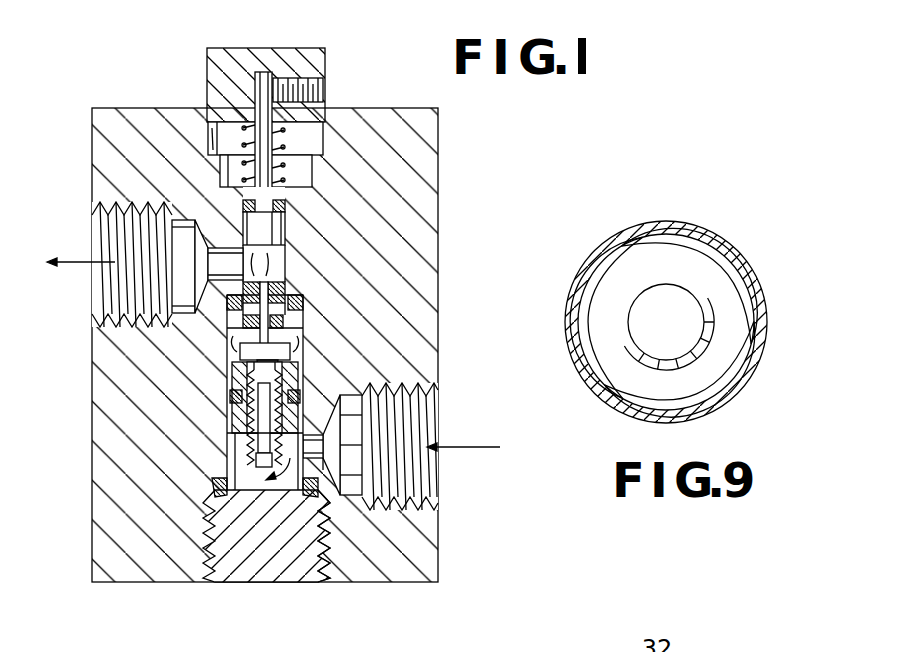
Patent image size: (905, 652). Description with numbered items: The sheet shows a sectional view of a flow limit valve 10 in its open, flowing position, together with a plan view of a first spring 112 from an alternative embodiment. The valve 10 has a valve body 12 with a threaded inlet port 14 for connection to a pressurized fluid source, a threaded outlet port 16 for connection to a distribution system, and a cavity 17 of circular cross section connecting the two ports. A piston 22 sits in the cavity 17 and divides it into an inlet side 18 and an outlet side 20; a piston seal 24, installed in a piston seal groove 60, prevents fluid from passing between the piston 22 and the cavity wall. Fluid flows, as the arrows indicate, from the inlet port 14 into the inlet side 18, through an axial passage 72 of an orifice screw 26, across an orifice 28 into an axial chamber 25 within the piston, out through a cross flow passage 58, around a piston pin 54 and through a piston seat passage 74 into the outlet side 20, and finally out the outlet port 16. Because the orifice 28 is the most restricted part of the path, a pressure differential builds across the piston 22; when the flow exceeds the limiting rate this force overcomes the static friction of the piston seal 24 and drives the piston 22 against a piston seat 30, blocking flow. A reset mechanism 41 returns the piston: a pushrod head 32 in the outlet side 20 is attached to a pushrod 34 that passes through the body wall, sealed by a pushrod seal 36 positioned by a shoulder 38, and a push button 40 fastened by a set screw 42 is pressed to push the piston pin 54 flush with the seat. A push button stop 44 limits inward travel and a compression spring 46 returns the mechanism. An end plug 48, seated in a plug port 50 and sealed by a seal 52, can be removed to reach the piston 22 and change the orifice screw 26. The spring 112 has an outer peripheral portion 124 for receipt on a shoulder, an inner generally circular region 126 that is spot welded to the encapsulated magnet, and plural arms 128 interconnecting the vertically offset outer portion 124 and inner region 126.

In FIG. 1, the flow limit valve 10 is at (395, 64).
In FIG. 1, the valve body 12 is at (440, 177).
In FIG. 1, the threaded inlet port 14 is at (422, 398).
In FIG. 1, the threaded outlet port 16 is at (93, 236).
In FIG. 1, the cavity 17 is at (219, 458).
In FIG. 1, the inlet side 18 is at (270, 482).
In FIG. 1, the outlet side 20 is at (278, 262).
In FIG. 1, the piston 22 is at (300, 390).
In FIG. 1, the piston seal 24 is at (230, 396).
In FIG. 1, the axial chamber 25 is at (268, 372).
In FIG. 1, the orifice screw 26 is at (332, 486).
In FIG. 1, the orifice 28 is at (256, 385).
In FIG. 1, the piston seat 30 is at (285, 308).
In FIG. 1, the pushrod head 32 is at (243, 225).
In FIG. 1, the pushrod 34 is at (313, 162).
In FIG. 1, the pushrod seal 36 is at (240, 205).
In FIG. 1, the shoulder 38 is at (288, 199).
In FIG. 1, the push button 40 is at (257, 48).
In FIG. 1, the reset mechanism 41 is at (261, 123).
In FIG. 1, the set screw 42 is at (317, 48).
In FIG. 1, the push button stop 44 is at (210, 126).
In FIG. 1, the compression spring 46 is at (282, 133).
In FIG. 1, the end plug 48 is at (238, 584).
In FIG. 1, the plug port 50 is at (332, 584).
In FIG. 1, the seal 52 is at (228, 482).
In FIG. 1, the piston pin 54 is at (290, 282).
In FIG. 1, the cross flow passage 58 is at (295, 328).
In FIG. 1, the piston seal groove 60 is at (232, 416).
In FIG. 1, the axial passage 72 is at (262, 436).
In FIG. 1, the piston seat passage 74 is at (245, 304).
In FIG. 9, the first spring 112 is at (682, 211).
In FIG. 9, the outer peripheral portion 124 is at (727, 257).
In FIG. 9, the inner circular region 126 is at (692, 362).
In FIG. 9, the arms 128 is at (602, 290).